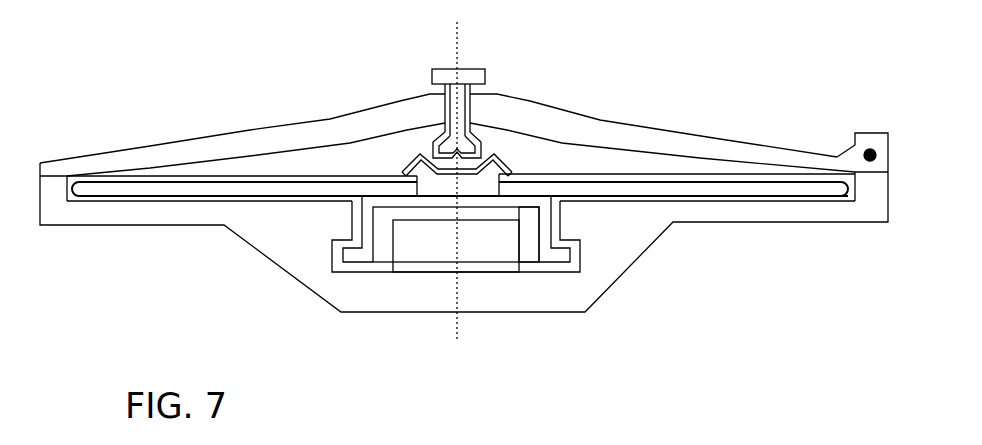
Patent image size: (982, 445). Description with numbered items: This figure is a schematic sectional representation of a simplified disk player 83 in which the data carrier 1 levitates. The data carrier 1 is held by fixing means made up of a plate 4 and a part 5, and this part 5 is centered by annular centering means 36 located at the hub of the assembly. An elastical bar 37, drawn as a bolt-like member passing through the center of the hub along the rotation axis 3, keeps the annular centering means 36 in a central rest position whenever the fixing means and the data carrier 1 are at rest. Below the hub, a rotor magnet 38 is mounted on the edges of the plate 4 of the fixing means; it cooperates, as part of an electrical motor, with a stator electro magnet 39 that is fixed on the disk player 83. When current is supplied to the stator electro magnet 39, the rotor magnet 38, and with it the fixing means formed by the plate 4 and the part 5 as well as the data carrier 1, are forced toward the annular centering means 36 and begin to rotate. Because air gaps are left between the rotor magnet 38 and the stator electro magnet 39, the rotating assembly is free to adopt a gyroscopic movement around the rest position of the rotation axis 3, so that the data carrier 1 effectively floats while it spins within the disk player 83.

The data carrier 1 is at (707, 187).
The rotation axis 3 is at (462, 50).
The plate 4 is at (503, 198).
The part of the fixing means 5 is at (500, 165).
The annular centering means 36 is at (343, 138).
The elastical bar 37 is at (411, 93).
The rotor magnet 38 is at (546, 293).
The stator electro magnet 39 is at (439, 293).
The disk player 83 is at (617, 247).